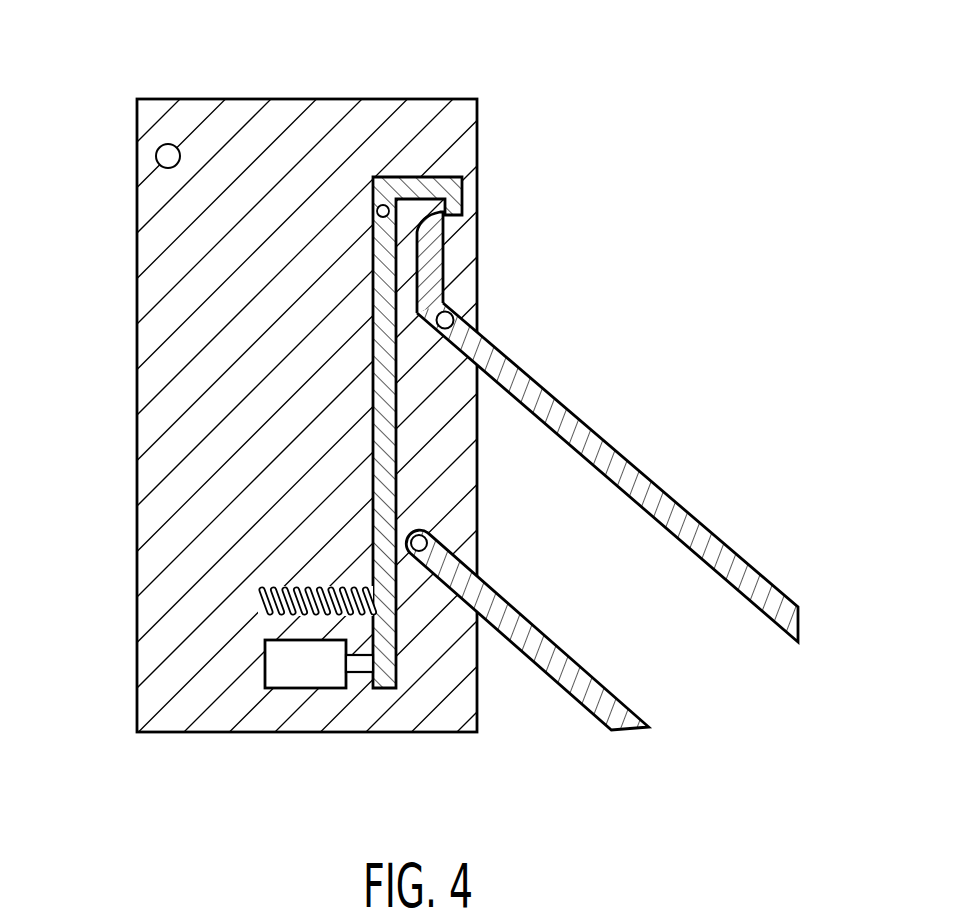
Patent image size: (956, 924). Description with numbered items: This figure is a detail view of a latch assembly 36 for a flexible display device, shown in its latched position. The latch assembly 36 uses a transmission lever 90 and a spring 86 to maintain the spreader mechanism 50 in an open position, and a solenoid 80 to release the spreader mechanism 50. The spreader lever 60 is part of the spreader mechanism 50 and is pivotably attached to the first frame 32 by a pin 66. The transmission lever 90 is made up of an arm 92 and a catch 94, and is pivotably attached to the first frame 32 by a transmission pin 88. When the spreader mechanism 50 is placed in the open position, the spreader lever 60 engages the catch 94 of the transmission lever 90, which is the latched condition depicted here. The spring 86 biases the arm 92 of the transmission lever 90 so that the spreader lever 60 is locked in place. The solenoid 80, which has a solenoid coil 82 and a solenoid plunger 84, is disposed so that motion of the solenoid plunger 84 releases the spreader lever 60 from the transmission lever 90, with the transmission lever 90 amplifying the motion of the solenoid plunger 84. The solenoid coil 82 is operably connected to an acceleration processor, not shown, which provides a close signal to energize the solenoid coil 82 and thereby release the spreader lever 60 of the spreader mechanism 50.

The first frame 32 is at (213, 323).
The latch assembly 36 is at (520, 113).
The spreader mechanism 50 is at (687, 457).
The spreader lever 60 is at (446, 271).
The pin 66 is at (455, 318).
The solenoid 80 is at (316, 723).
The solenoid coil 82 is at (305, 667).
The solenoid plunger 84 is at (360, 666).
The spring 86 is at (258, 606).
The transmission pin 88 is at (377, 210).
The transmission lever 90 is at (353, 422).
The arm 92 is at (388, 487).
The catch 94 is at (464, 197).